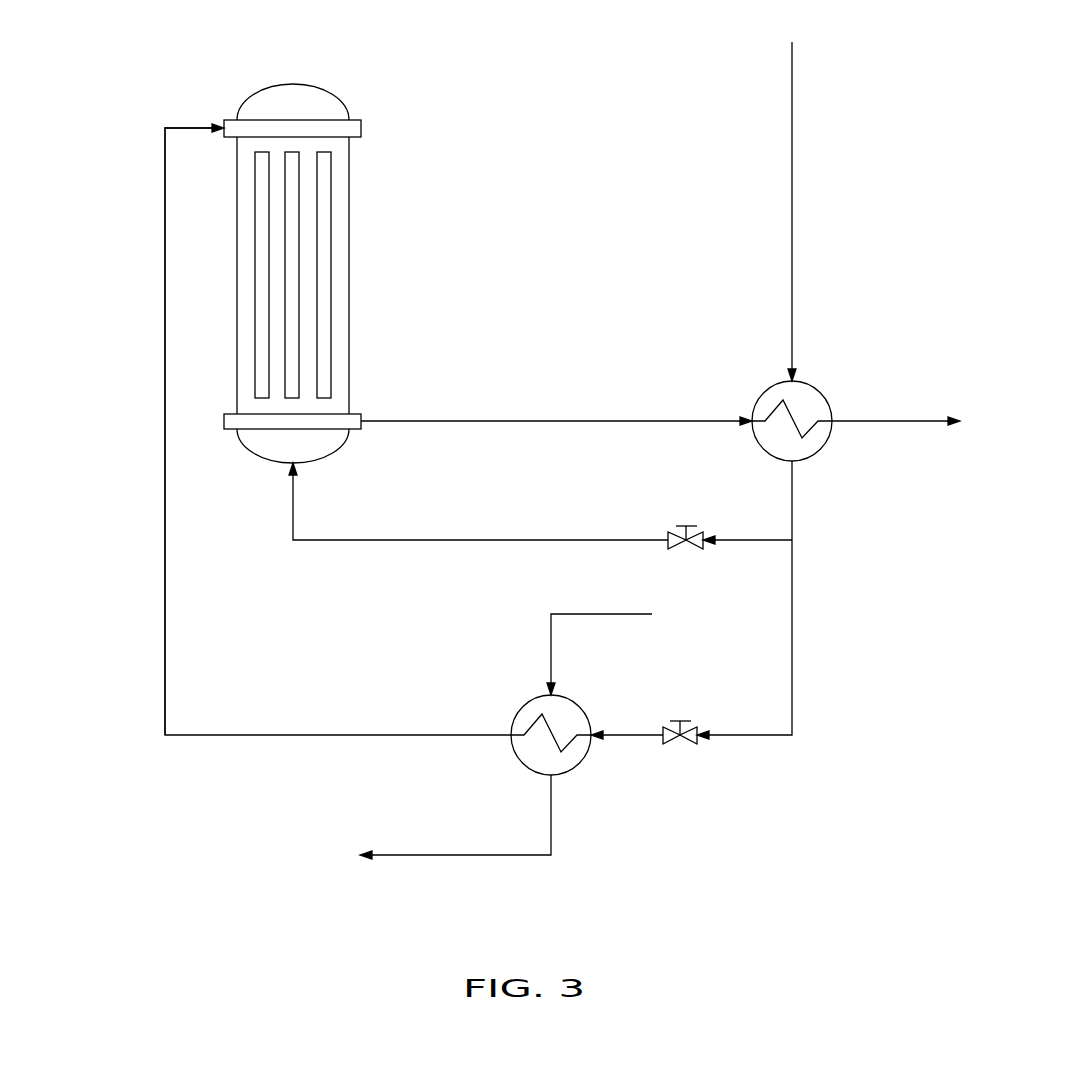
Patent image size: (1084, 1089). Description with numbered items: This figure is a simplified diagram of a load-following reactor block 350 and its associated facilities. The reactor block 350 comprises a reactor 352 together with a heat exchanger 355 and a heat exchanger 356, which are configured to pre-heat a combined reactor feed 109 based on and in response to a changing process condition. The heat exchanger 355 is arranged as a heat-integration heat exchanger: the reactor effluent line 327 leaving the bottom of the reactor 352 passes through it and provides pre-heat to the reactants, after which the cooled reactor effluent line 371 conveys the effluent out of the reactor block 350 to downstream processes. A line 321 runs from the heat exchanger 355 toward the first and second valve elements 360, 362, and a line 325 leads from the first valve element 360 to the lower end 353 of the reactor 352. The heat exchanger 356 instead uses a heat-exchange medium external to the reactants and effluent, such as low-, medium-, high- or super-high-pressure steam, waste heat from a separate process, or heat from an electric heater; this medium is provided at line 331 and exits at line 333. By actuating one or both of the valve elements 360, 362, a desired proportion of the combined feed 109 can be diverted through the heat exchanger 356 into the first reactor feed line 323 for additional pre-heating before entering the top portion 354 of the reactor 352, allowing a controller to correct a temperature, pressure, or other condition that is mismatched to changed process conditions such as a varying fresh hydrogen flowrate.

The combined reactor feed 109 is at (792, 122).
The line from heat exchanger 321 is at (792, 597).
The first reactor feed line 323 is at (165, 645).
The line to reactor bottom 325 is at (323, 541).
The reactor effluent line 327 is at (381, 421).
The heat-exchange medium inlet line 331 is at (551, 636).
The heat-exchange medium outlet line 333 is at (430, 855).
The reactor block 350 is at (138, 539).
The reactor 352 is at (349, 268).
The bottom head 353 is at (338, 460).
The top portion 354 is at (362, 128).
The heat exchanger 355 is at (755, 390).
The heat exchanger 356 is at (518, 702).
The first valve element 360 is at (668, 531).
The second valve element 362 is at (663, 727).
The cooled reactor effluent line 371 is at (872, 416).